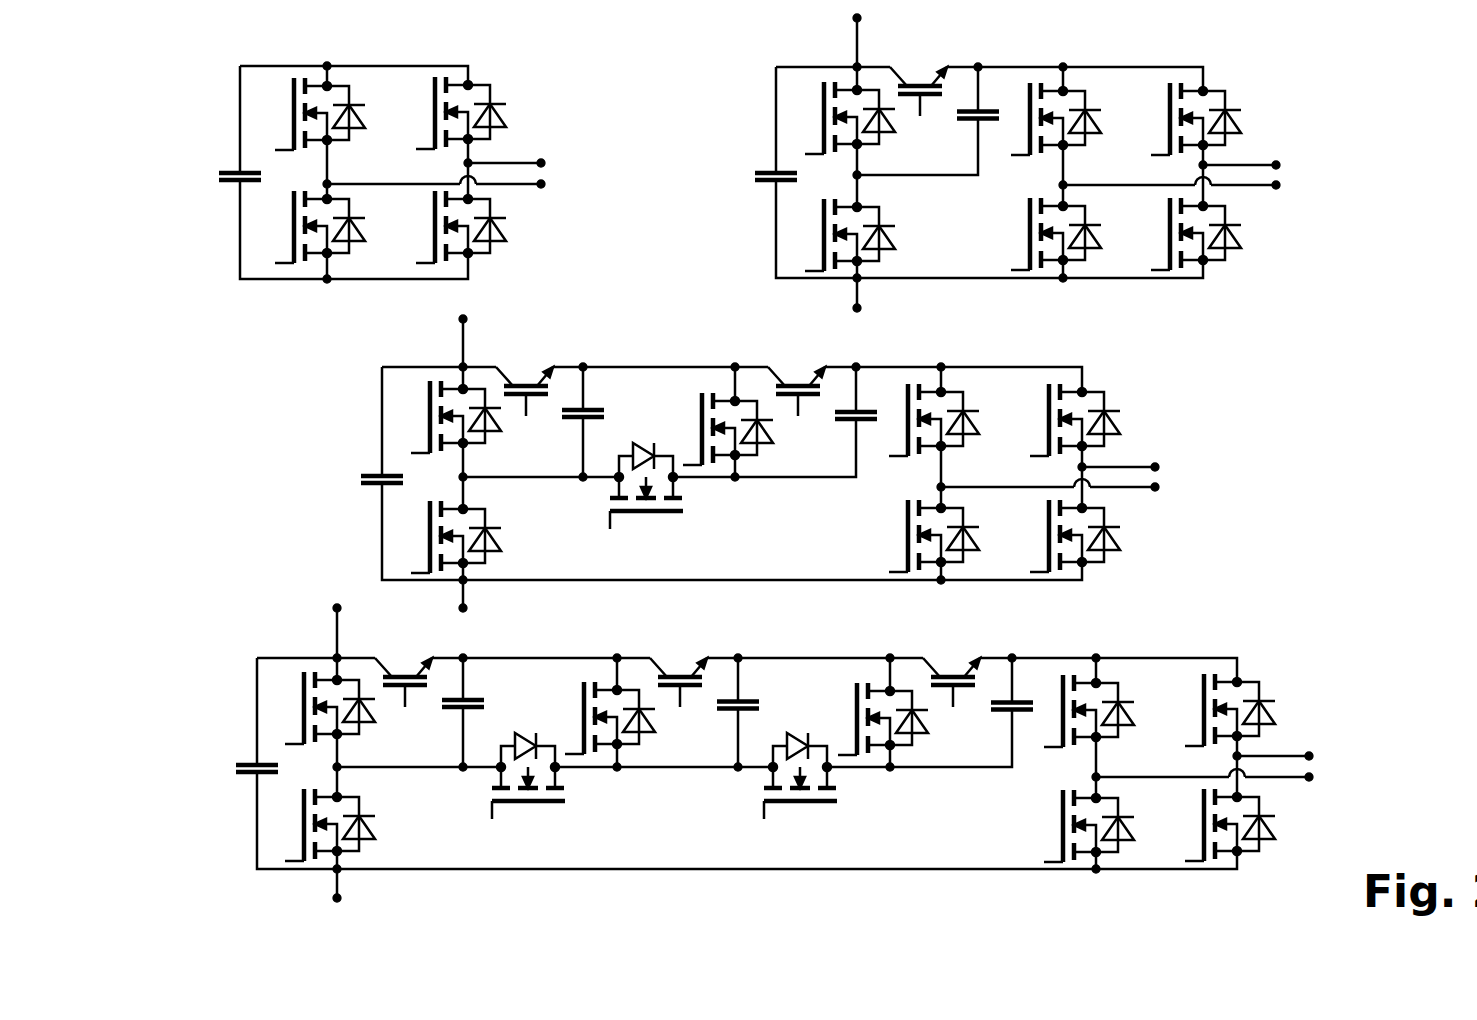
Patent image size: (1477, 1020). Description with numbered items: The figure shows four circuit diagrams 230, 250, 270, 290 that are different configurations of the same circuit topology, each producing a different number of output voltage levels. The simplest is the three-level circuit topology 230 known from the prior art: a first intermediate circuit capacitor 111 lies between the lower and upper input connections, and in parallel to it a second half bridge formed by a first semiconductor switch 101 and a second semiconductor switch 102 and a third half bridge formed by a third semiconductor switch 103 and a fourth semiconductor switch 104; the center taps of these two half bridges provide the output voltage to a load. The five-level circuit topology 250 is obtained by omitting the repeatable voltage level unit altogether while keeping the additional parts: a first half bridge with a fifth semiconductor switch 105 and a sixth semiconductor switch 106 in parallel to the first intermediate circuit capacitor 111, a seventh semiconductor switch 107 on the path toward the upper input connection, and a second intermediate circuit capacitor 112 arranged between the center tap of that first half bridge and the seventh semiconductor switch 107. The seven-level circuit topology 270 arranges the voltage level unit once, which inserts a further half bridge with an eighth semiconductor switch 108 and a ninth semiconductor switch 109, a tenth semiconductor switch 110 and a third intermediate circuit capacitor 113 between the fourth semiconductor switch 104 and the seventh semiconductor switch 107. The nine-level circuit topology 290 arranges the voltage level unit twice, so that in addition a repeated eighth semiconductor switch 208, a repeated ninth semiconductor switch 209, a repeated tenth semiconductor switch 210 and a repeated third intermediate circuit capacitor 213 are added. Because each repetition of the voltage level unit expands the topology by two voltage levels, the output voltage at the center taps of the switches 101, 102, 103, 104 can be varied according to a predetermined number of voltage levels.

The first semiconductor switch 101 is at (294, 118).
The second semiconductor switch 102 is at (290, 226).
The third semiconductor switch 103 is at (495, 98).
The fourth semiconductor switch 104 is at (495, 247).
The fifth semiconductor switch 105 is at (823, 117).
The sixth semiconductor switch 106 is at (818, 228).
The seventh semiconductor switch 107 is at (910, 98).
The eighth semiconductor switch 108 is at (652, 515).
The ninth semiconductor switch 109 is at (700, 430).
The tenth semiconductor switch 110 is at (785, 405).
The first intermediate circuit capacitor 111 is at (236, 188).
The second intermediate circuit capacitor 112 is at (975, 121).
The third intermediate circuit capacitor 113 is at (851, 424).
The repeated eighth semiconductor switch 208 is at (806, 805).
The repeated ninth semiconductor switch 209 is at (855, 718).
The repeated tenth semiconductor switch 210 is at (940, 695).
The repeated third intermediate circuit capacitor 213 is at (1005, 713).
The circuit with three-level circuit topology 230 is at (186, 173).
The circuit with five-level circuit topology 250 is at (741, 164).
The circuit with seven-level circuit topology 270 is at (344, 464).
The circuit with nine-level circuit topology 290 is at (212, 754).